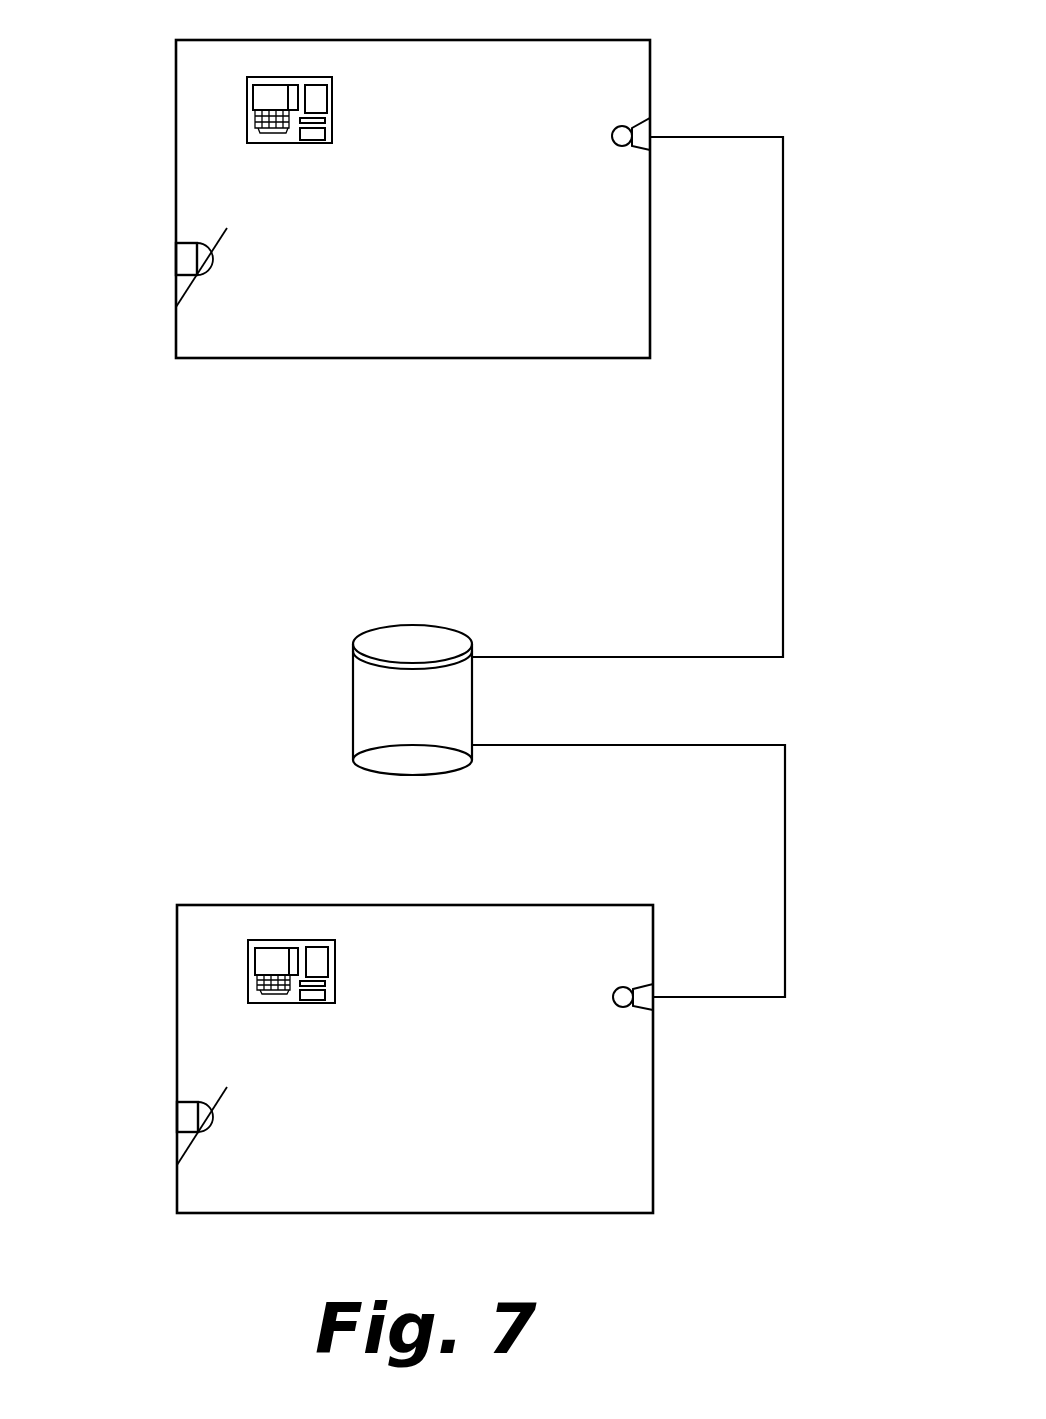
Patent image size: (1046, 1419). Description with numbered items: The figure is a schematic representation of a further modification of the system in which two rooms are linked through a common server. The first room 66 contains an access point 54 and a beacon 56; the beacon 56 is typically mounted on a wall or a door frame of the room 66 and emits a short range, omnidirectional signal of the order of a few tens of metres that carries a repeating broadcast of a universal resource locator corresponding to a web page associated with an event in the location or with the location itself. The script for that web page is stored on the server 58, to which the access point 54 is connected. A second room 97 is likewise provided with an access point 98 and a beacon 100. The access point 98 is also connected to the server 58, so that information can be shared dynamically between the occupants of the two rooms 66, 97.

The access point 54 is at (648, 121).
The beacon 56 is at (183, 260).
The room 66 is at (280, 336).
The server 58 is at (378, 718).
The second room 97 is at (558, 1163).
The access point 98 is at (653, 999).
The beacon 100 is at (186, 1120).